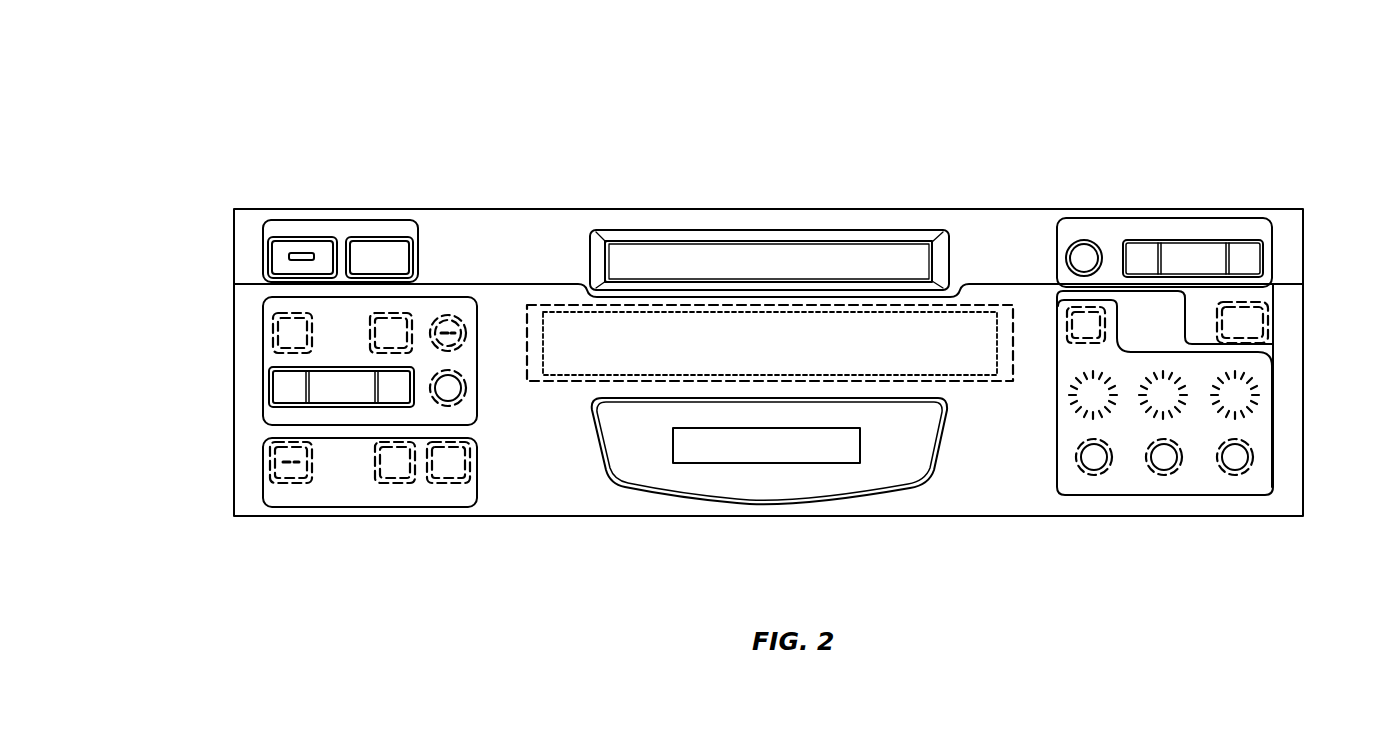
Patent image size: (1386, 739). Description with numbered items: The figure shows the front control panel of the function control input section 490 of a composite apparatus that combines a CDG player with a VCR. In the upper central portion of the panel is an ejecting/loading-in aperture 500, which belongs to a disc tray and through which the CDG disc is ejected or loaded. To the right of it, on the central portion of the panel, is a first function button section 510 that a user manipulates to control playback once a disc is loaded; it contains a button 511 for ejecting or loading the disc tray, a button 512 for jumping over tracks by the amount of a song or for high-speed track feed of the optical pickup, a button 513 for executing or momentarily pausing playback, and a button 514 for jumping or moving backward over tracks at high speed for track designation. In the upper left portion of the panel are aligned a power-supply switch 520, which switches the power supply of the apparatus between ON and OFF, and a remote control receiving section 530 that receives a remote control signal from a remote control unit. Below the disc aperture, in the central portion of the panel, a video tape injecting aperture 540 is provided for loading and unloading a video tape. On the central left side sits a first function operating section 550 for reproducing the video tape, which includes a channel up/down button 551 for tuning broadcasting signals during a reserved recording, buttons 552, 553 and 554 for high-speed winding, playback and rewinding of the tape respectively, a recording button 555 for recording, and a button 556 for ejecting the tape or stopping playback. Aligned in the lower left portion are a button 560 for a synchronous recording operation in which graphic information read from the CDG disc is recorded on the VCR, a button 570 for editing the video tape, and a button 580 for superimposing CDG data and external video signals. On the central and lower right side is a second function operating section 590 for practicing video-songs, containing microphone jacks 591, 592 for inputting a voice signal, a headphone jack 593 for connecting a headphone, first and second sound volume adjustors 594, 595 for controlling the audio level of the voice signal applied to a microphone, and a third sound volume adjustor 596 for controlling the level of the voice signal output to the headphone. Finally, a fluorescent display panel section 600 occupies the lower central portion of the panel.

The function control input section 490 is at (700, 92).
The ejecting/loading-in aperture 500 is at (759, 252).
The first function button section 510 is at (1157, 212).
The button 511 is at (1083, 257).
The button 512 is at (1148, 252).
The button 513 is at (1175, 252).
The button 514 is at (1250, 252).
The power-supply switch 520 is at (303, 247).
The remote control receiving section 530 is at (379, 248).
The video tape injecting aperture 540 is at (790, 355).
The first function operating section 550 is at (278, 462).
The channel up/down button 551 is at (288, 334).
The button 552 is at (287, 387).
The button 553 is at (330, 388).
The button 554 is at (403, 397).
The recording button 555 is at (450, 318).
The button 556 is at (458, 397).
The button 560 is at (280, 457).
The button 570 is at (397, 463).
The button 580 is at (450, 460).
The second function operating section 590 is at (1131, 423).
The microphone jack 591 is at (1164, 457).
The microphone jack 592 is at (1235, 457).
The headphone jack 593 is at (1094, 457).
The first sound volume adjustor 594 is at (1163, 394).
The second sound volume adjustor 595 is at (1235, 395).
The third sound volume adjustor 596 is at (1083, 393).
The fluorescent display panel section 600 is at (777, 487).